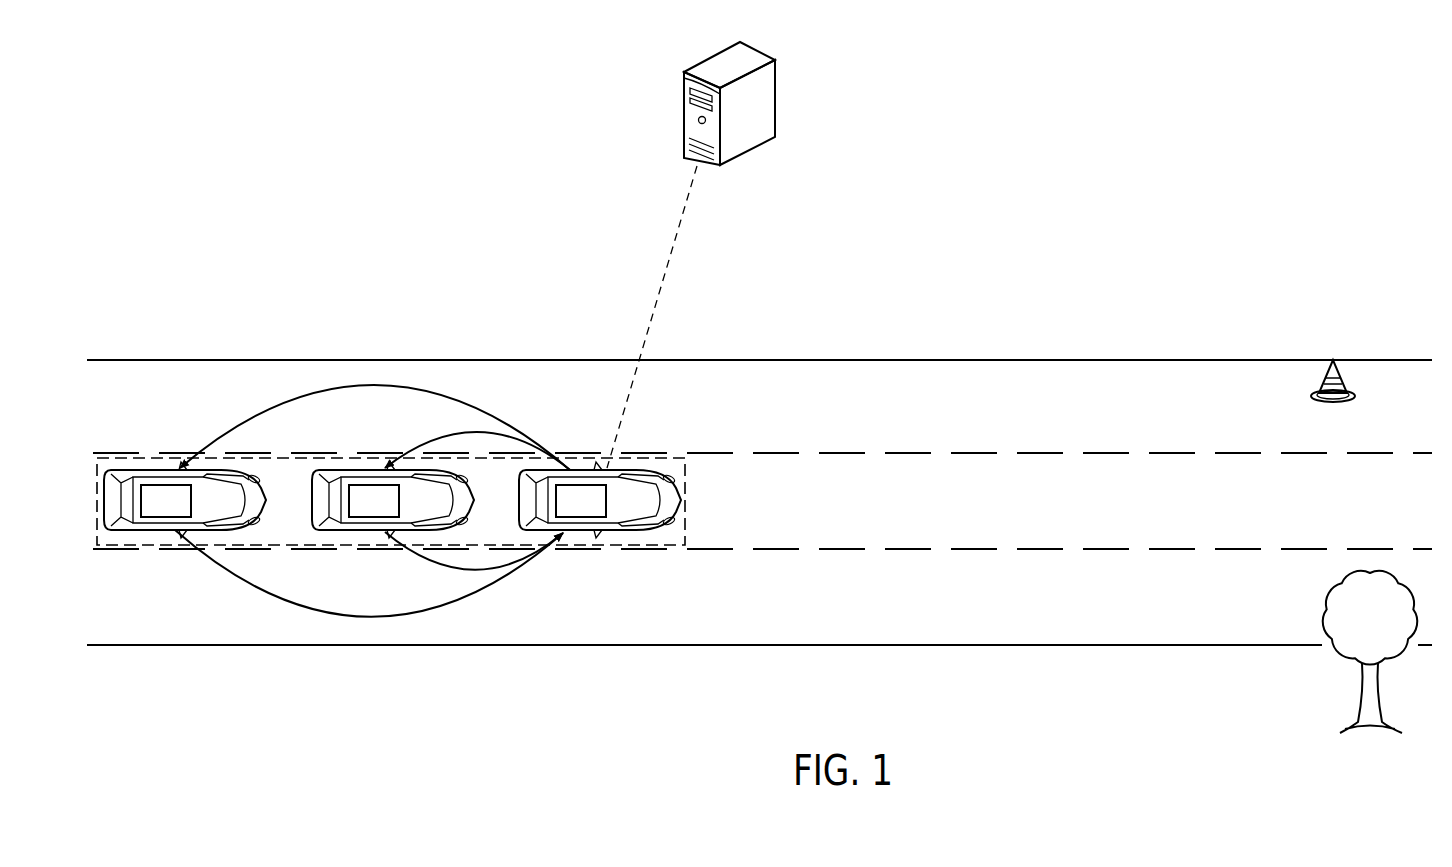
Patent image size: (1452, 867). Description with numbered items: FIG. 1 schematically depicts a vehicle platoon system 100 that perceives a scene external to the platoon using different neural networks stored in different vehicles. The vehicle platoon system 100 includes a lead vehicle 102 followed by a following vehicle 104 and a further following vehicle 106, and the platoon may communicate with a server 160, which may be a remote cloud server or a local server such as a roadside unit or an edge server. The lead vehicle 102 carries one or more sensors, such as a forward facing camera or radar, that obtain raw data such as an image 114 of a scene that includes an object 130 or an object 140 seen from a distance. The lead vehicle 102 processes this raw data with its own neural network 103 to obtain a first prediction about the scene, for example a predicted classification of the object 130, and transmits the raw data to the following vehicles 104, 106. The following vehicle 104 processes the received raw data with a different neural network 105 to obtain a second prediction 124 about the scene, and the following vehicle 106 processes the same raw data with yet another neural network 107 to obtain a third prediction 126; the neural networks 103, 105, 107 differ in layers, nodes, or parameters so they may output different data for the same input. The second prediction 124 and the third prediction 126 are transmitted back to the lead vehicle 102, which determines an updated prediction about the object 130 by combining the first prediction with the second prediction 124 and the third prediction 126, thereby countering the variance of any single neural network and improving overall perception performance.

The vehicle platoon system 100 is at (688, 512).
The lead vehicle 102 is at (652, 532).
The neural network 103 is at (578, 530).
The following vehicle 104 is at (370, 532).
The neural network 105 is at (357, 530).
The following vehicle 106 is at (162, 532).
The neural network 107 is at (150, 530).
The image 114 is at (218, 433).
The second prediction 124 is at (525, 563).
The third prediction 126 is at (487, 592).
The object 130 is at (1363, 710).
The object 140 is at (1335, 358).
The server 160 is at (776, 100).